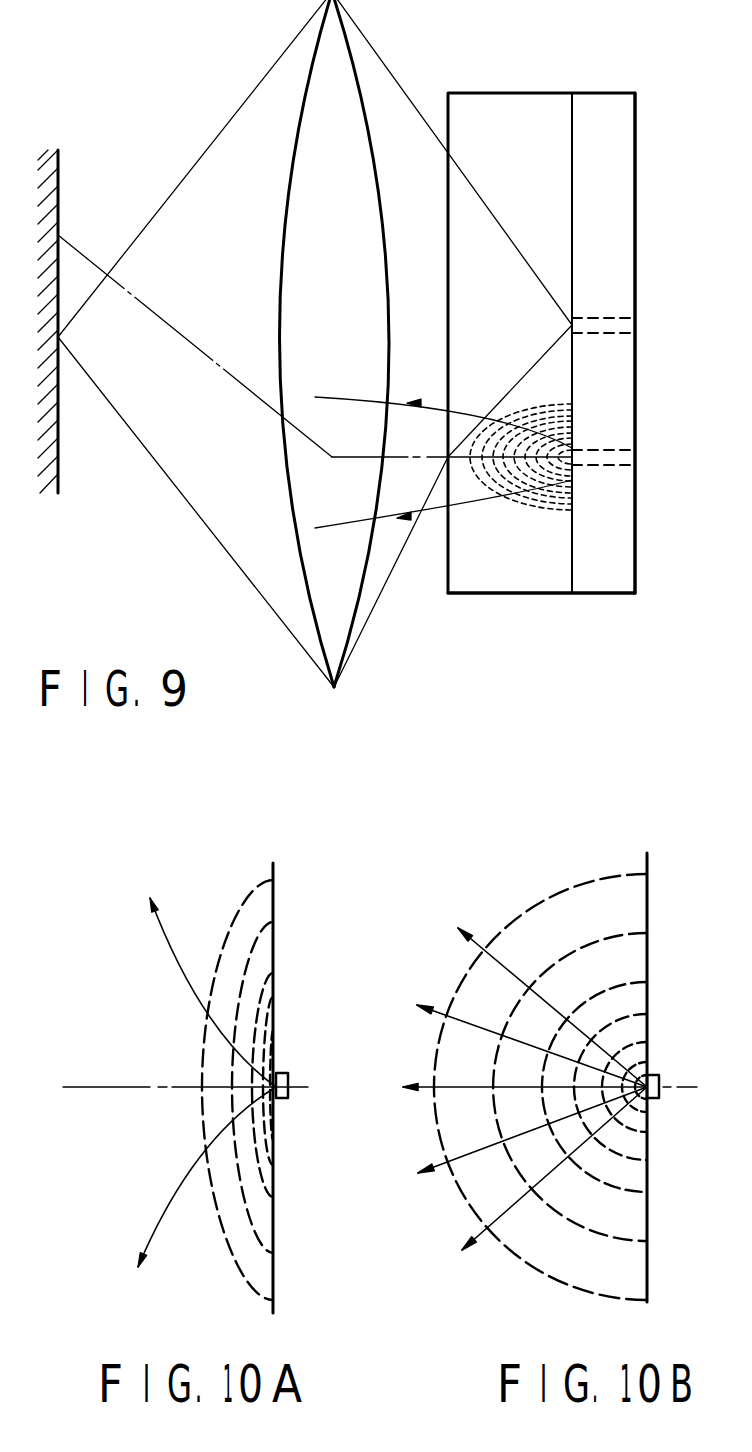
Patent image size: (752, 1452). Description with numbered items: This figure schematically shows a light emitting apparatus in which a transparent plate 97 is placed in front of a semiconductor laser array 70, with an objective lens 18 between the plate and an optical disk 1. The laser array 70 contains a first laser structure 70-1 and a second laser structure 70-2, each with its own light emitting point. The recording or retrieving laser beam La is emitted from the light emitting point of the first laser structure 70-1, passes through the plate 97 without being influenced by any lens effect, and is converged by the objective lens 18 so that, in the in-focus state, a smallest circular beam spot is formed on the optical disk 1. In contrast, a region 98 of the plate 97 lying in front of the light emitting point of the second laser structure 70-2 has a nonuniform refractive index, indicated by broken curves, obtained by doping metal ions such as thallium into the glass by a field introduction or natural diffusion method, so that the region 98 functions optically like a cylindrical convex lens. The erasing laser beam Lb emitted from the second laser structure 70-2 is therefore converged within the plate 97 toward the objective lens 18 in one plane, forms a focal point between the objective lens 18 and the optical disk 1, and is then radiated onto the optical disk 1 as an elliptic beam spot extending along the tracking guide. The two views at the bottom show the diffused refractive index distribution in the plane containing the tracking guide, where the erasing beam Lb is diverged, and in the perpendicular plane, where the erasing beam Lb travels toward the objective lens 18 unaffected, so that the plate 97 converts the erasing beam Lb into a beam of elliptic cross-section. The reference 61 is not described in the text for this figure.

In FIG. 9, the optical disk 1 is at (60, 465).
In FIG. 9, the objective lens 18 is at (292, 174).
In FIG. 9, the transparent plate 97 is at (504, 112).
In FIG. 9, the semiconductor laser array 70 is at (599, 110).
In FIG. 9, the first laser structure 70-1 is at (614, 315).
In FIG. 9, the second laser structure 70-2 is at (612, 445).
In FIG. 10A, the second laser structure 70-2 is at (285, 1073).
In FIG. 10B, the second laser structure 70-2 is at (660, 1075).
In FIG. 9, the region of transparent plate 98 is at (548, 512).
In FIG. 10A, the region of transparent plate 98 is at (258, 905).
In FIG. 10B, the region of transparent plate 98 is at (563, 912).
In FIG. 9, the recording medium 61 is at (479, 584).
In FIG. 9, the recording or retrieving laser beam La is at (505, 258).
In FIG. 9, the erasing laser beam Lb is at (472, 500).
In FIG. 10A, the erasing laser beam Lb is at (165, 938).
In FIG. 10B, the erasing laser beam Lb is at (470, 1160).